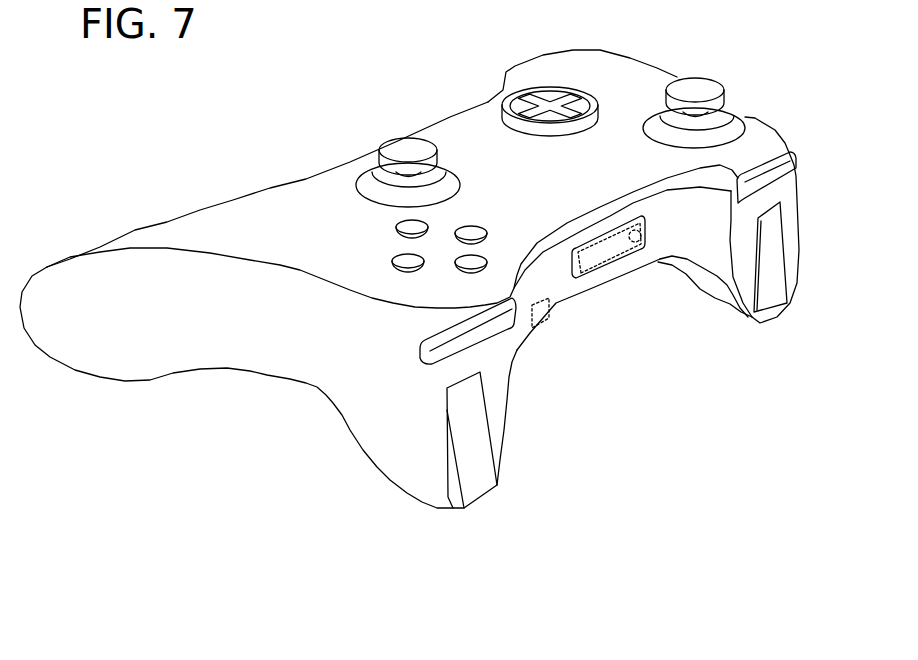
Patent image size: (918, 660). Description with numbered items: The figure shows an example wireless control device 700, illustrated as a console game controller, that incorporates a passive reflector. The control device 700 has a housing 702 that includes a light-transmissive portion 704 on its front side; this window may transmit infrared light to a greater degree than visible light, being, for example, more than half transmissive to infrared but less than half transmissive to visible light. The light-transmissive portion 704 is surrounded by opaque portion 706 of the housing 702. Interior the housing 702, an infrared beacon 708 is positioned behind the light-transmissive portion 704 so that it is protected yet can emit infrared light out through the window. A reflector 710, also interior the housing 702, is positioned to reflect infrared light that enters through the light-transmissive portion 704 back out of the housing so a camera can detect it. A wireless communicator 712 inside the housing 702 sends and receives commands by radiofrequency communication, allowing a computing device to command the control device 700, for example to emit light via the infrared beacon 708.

The wireless control device 700 is at (138, 130).
The housing 702 is at (265, 194).
The light-transmissive portion 704 is at (632, 248).
The opaque portion 706 is at (570, 293).
The infrared beacon 708 is at (637, 221).
The reflector 710 is at (593, 235).
The wireless communicator 712 is at (548, 308).